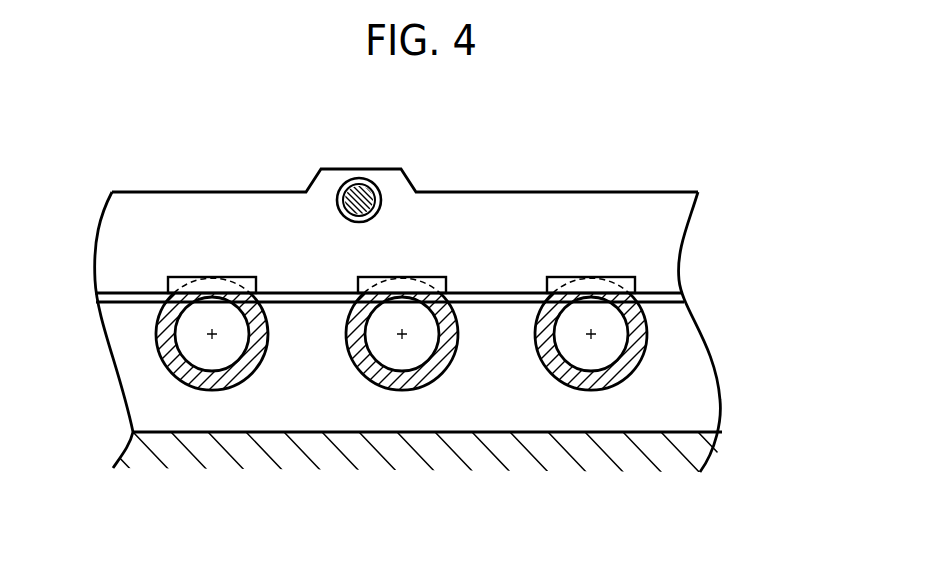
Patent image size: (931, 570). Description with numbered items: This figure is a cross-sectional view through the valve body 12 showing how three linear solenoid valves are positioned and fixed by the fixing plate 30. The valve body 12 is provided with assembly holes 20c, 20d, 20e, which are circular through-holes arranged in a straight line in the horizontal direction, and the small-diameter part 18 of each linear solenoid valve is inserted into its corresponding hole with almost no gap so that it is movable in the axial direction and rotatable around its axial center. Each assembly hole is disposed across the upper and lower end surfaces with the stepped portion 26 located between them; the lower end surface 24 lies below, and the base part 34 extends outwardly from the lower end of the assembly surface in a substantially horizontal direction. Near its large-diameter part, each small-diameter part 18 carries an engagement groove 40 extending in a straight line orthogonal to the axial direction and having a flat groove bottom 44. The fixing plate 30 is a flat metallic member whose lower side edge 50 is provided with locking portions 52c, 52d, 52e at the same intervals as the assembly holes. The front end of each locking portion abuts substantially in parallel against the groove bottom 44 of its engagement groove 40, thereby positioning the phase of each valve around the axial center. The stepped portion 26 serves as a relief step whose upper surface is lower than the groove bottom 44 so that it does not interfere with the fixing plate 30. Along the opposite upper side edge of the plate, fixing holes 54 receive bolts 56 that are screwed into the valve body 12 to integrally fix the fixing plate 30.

The valve body 12 is at (733, 452).
The small-diameter part 18 is at (187, 387).
The assembly hole 20c is at (215, 387).
The assembly hole 20d is at (405, 387).
The assembly hole 20e is at (594, 387).
The lower end surface 24 is at (692, 373).
The stepped portion 26 is at (670, 298).
The fixing plate 30 is at (118, 237).
The base part 34 is at (296, 452).
The engagement groove 40 is at (212, 286).
The groove bottom 44 is at (181, 288).
The side edge 50 is at (132, 303).
The locking portion 52c is at (238, 285).
The locking portion 52d is at (443, 285).
The locking portion 52e is at (620, 285).
The fixing hole 54 is at (359, 178).
The bolt 56 is at (378, 195).